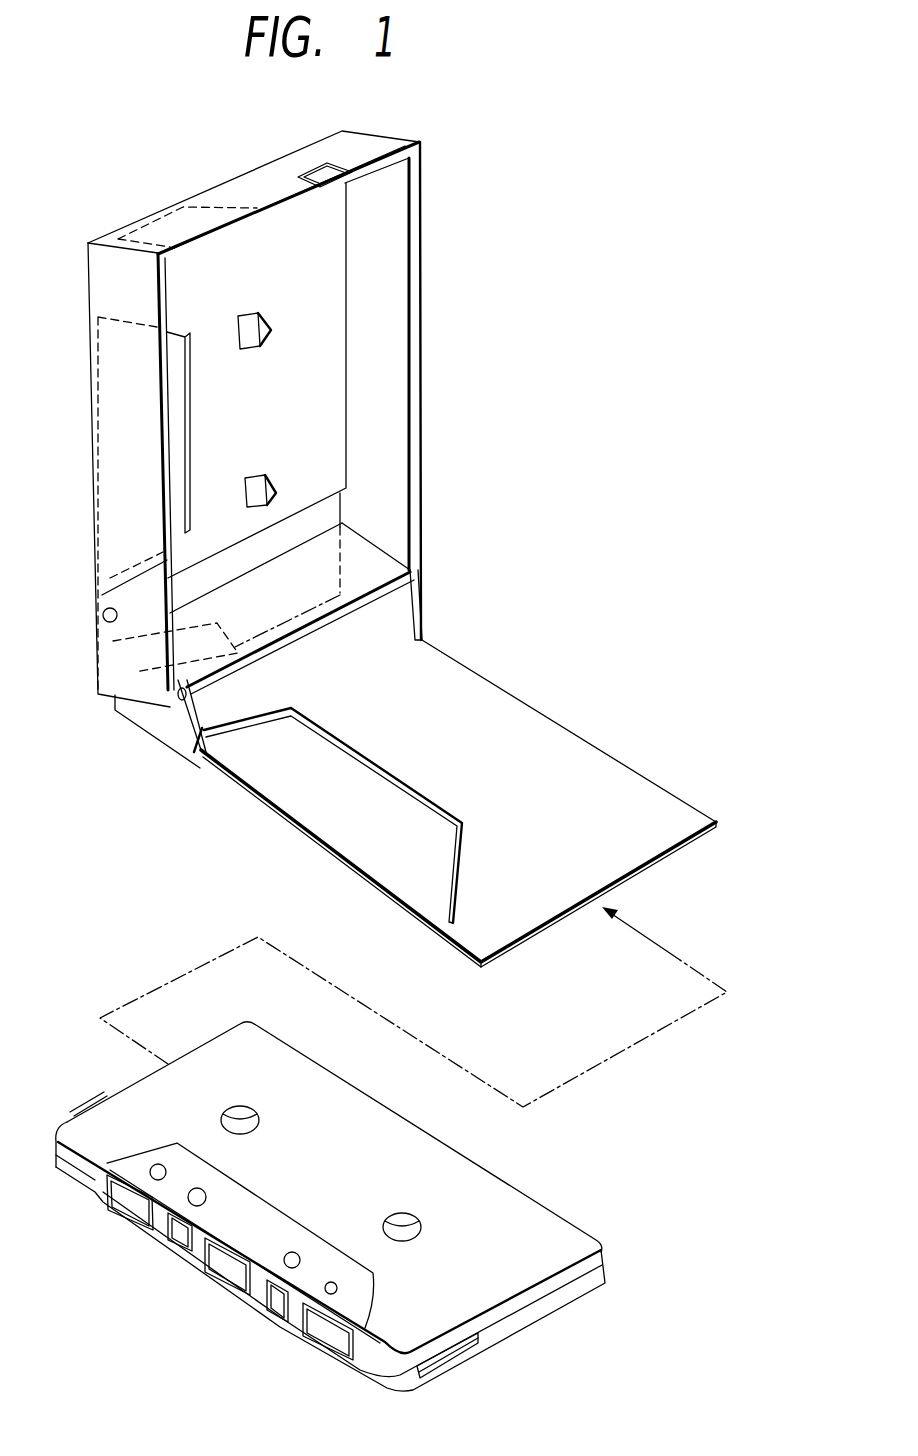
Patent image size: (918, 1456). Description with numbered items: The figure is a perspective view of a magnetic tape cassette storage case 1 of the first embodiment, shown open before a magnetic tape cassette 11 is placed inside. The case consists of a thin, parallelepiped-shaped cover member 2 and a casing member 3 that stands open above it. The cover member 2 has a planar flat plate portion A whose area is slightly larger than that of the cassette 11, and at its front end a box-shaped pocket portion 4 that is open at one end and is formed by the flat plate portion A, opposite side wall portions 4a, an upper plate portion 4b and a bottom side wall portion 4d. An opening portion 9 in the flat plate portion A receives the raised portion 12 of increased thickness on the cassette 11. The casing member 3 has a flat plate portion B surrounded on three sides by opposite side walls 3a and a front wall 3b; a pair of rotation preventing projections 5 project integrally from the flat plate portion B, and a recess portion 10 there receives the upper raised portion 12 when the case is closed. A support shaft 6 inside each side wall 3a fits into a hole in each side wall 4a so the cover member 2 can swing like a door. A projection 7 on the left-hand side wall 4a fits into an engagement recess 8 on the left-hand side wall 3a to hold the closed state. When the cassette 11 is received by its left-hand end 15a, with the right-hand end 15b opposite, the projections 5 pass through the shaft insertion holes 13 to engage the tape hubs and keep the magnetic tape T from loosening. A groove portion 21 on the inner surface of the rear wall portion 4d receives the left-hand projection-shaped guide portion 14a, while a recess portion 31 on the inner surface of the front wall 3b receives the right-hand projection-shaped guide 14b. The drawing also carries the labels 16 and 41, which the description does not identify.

The magnetic tape cassette storage case 1 is at (505, 507).
The cover member 2 is at (515, 686).
The casing member 3 is at (435, 348).
The side walls of the casing member 3a is at (103, 263).
The front wall of the casing member 3b is at (241, 181).
The pocket portion 4 is at (303, 646).
The side wall portions of the pocket portion 4a is at (426, 612).
The upper plate portion 4b is at (262, 605).
The bottom side wall portion 4d is at (197, 597).
The rotation preventing projections 5 is at (268, 478).
The support shaft 6 is at (108, 698).
The projection 7 is at (171, 712).
The engagement recess 8 is at (103, 617).
The opening portion 9 is at (423, 834).
The recess portion 10 is at (190, 416).
The magnetic tape cassette 11 is at (607, 1222).
The raised portion 12 is at (254, 1205).
The shaft insertion holes 13 is at (242, 1113).
The left-hand projection-shaped guide portion 14a is at (108, 1090).
The right-hand projection-shaped guide 14b is at (472, 1362).
The left-hand end of the cassette 15a is at (201, 1043).
The right-hand end of the cassette 15b is at (578, 1283).
The front openings 16 is at (220, 1300).
The groove portion 21 is at (248, 660).
The recess portion 31 is at (161, 220).
The opening 41 is at (322, 164).
The flat plate portion of the cover member A is at (478, 790).
The flat plate portion of the casing member B is at (248, 292).
The magnetic tape T is at (130, 1208).